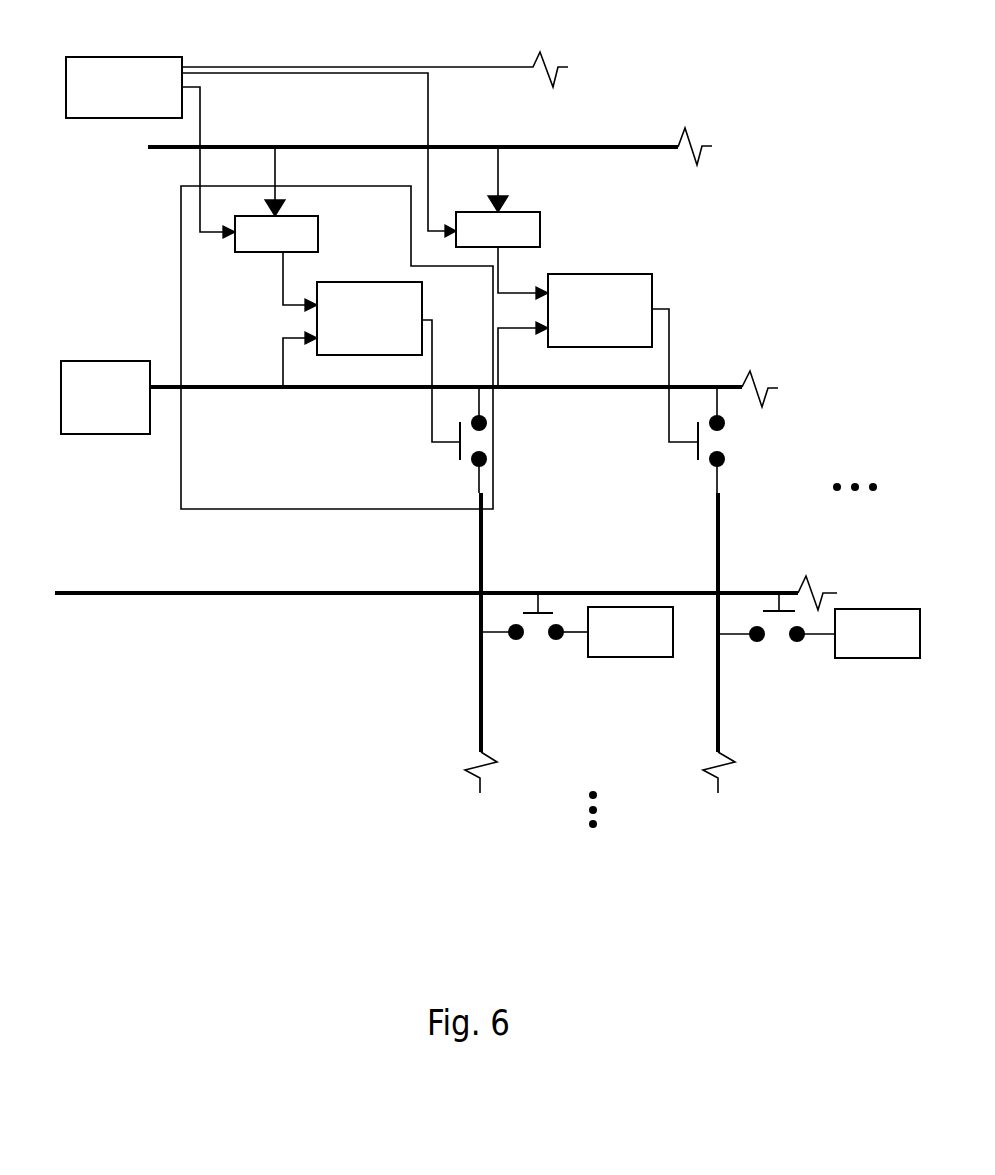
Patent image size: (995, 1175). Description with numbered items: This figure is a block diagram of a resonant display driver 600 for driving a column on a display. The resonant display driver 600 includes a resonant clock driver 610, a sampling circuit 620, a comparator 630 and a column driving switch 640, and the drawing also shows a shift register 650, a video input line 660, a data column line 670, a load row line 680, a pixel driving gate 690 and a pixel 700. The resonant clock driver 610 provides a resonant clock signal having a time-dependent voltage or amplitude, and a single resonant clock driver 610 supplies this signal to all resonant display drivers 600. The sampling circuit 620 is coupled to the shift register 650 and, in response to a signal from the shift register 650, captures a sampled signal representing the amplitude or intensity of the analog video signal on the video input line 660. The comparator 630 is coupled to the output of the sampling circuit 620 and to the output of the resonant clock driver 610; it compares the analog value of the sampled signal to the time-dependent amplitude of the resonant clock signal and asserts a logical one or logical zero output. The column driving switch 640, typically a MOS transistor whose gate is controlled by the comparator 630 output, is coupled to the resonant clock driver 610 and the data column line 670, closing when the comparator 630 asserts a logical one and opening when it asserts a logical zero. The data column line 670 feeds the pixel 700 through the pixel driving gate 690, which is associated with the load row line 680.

The resonant display driver 600 is at (181, 492).
The resonant clock driver 610 is at (106, 361).
The sampling circuit 620 is at (318, 233).
The comparator 630 is at (387, 282).
The column driving switch 640 is at (453, 448).
The shift register 650 is at (100, 57).
The video input line 660 is at (166, 150).
The data column line 670 is at (480, 745).
The load row line 680 is at (255, 592).
The pixel driving gate 690 is at (545, 603).
The pixel 700 is at (627, 657).